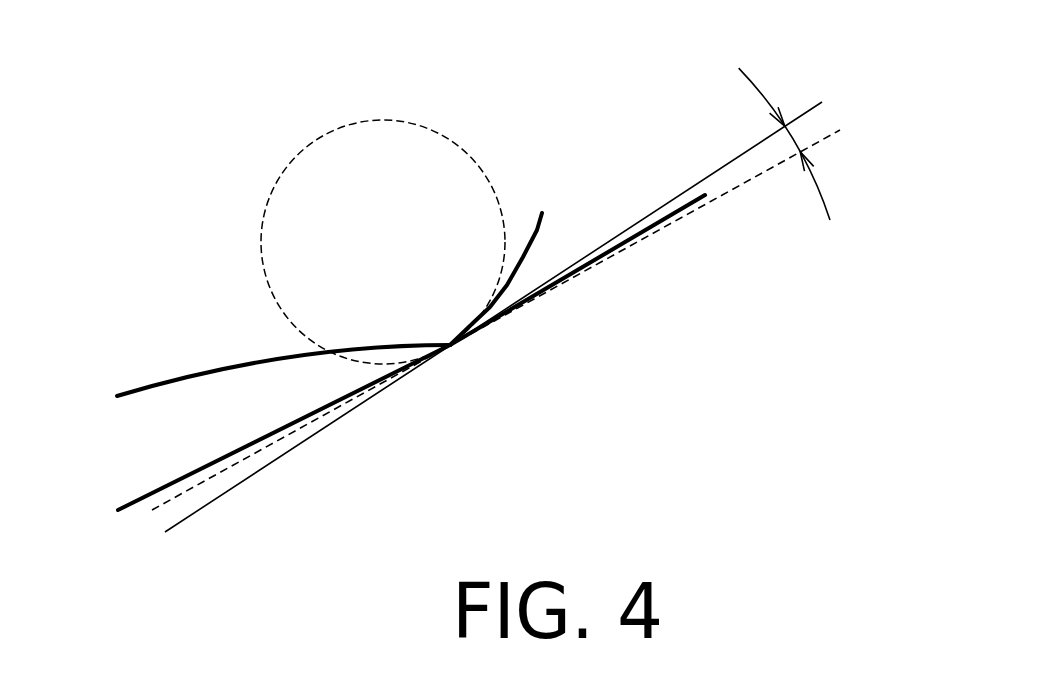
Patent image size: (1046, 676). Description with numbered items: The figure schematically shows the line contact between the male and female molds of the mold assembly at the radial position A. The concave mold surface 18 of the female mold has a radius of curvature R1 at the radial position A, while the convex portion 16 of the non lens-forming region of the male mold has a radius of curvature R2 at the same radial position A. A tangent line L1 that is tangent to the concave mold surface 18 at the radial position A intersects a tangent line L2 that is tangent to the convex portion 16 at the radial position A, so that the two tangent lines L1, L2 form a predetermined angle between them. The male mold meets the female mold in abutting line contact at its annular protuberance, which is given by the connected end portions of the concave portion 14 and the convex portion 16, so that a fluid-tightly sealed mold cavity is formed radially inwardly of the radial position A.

The concave portion 14 is at (217, 372).
The convex portion 16 is at (540, 240).
The mold surface 18 is at (205, 467).
The radius of curvature R1 is at (662, 221).
The radius of curvature R2 is at (450, 345).
The tangent line L1 is at (828, 135).
The tangent line L2 is at (803, 112).
The radial position A is at (453, 353).